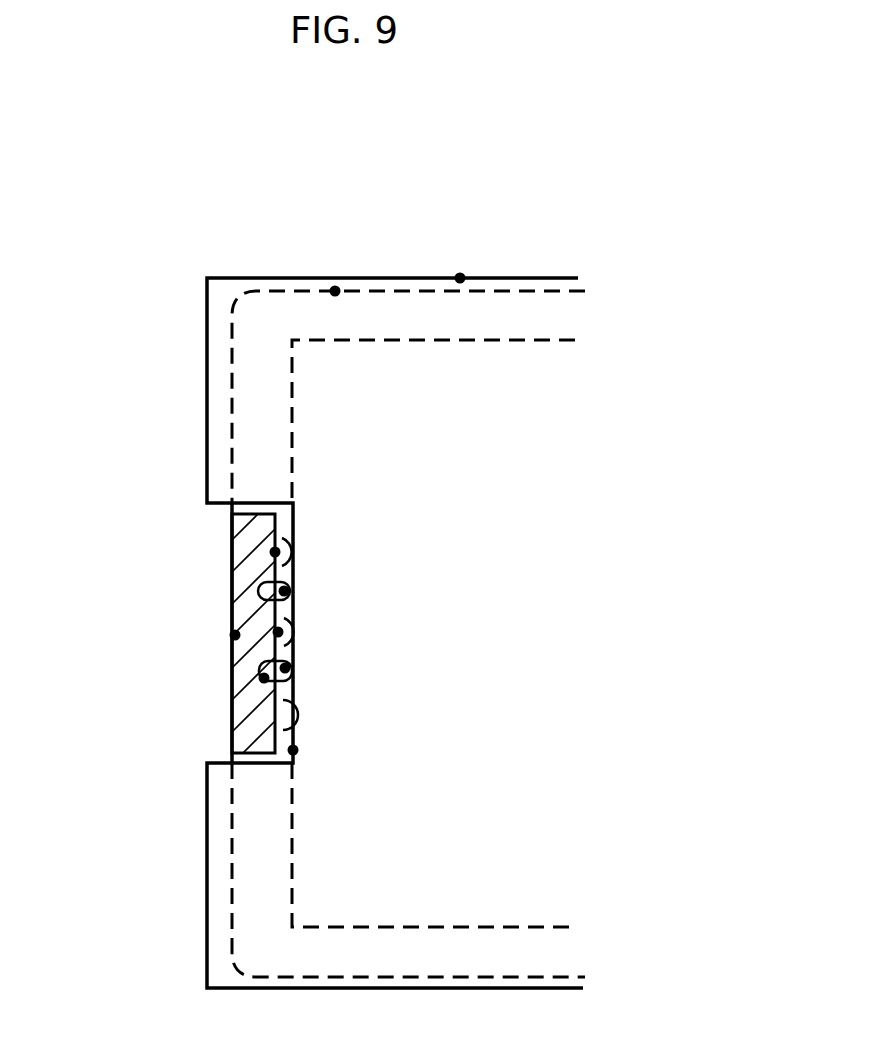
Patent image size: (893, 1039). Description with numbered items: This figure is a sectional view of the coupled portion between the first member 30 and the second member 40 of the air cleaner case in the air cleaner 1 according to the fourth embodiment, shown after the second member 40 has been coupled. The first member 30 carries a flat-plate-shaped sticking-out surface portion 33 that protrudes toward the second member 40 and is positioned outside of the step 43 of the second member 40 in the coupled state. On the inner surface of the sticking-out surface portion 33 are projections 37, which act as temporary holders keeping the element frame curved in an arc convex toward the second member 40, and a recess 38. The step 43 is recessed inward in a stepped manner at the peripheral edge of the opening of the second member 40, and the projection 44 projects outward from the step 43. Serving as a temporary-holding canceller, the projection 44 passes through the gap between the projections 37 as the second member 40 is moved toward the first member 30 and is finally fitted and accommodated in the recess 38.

The air cleaner 1 is at (545, 263).
The first member 30 is at (336, 289).
The second member 40 is at (461, 277).
The sticking-out surface portion 33 is at (235, 635).
The projection 37 is at (278, 632).
The recess 38 is at (264, 678).
The step 43 is at (293, 750).
The projection 44 is at (285, 668).